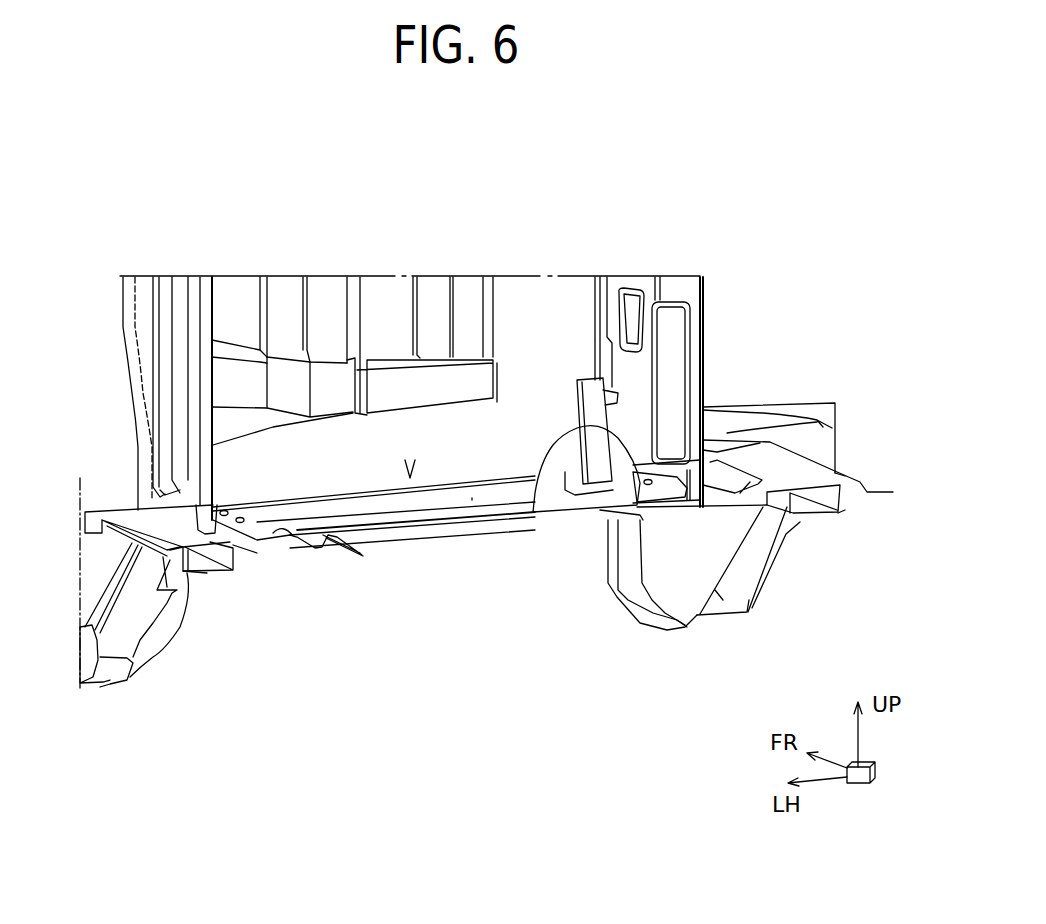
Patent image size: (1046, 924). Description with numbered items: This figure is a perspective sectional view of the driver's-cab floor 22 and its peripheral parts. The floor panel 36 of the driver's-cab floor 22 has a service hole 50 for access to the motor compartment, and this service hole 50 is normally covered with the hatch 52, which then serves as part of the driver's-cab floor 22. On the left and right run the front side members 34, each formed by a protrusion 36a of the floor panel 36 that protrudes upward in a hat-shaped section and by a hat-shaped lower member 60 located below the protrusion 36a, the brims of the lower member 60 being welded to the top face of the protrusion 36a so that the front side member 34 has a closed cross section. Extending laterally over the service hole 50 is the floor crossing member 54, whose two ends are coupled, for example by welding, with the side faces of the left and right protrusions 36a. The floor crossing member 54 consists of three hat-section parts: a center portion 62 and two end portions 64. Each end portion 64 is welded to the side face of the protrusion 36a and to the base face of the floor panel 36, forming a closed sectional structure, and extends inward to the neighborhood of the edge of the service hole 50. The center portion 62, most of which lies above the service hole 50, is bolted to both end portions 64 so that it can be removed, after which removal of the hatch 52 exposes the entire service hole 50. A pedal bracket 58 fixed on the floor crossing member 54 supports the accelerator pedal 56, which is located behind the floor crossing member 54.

The driver's-cab floor 22 is at (880, 445).
The front side member 34 is at (262, 577).
The floor panel 36 is at (273, 527).
The protrusion 36a is at (130, 515).
The service hole 50 is at (362, 553).
The hatch 52 is at (490, 520).
The floor crossing member 54 is at (408, 460).
The accelerator pedal 56 is at (590, 390).
The pedal bracket 58 is at (557, 460).
The lower member 60 is at (207, 573).
The center portion 62 is at (472, 500).
The end portion 64 is at (258, 520).